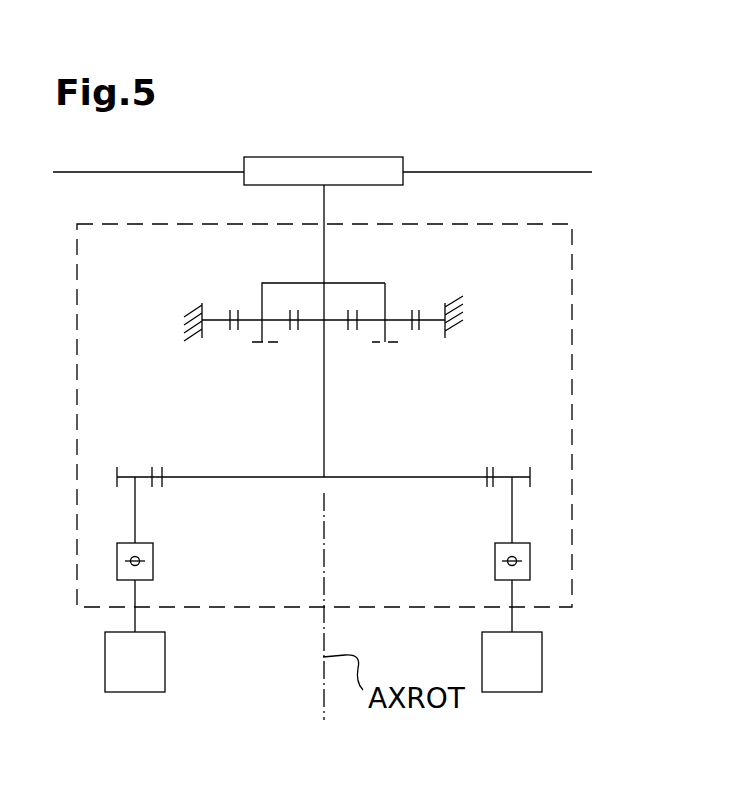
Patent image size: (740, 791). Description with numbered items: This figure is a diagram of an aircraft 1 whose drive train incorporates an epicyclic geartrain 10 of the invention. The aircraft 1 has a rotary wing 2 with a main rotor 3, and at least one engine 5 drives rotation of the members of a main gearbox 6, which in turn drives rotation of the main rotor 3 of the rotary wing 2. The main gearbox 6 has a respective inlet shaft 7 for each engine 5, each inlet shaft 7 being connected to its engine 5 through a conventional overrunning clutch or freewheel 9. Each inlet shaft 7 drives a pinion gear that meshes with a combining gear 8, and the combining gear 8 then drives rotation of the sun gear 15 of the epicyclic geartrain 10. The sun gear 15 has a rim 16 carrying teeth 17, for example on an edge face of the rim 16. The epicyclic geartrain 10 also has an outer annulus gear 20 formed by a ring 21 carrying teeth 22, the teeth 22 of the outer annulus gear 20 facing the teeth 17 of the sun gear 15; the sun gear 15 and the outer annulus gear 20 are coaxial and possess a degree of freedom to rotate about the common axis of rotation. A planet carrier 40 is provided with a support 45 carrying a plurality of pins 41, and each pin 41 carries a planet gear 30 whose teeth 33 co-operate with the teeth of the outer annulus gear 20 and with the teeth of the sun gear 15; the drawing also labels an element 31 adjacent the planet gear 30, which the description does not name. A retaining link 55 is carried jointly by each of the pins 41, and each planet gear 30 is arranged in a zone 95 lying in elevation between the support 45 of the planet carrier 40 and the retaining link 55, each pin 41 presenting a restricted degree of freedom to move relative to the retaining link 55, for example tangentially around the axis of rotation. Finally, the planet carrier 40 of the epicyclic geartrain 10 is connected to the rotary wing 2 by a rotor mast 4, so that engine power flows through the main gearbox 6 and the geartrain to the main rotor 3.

The aircraft 1 is at (590, 298).
The rotary wing 2 is at (403, 154).
The main rotor 3 is at (425, 158).
The rotor mast 4 is at (323, 205).
The engine 5 is at (144, 676).
The main gearbox 6 is at (75, 495).
The inlet shaft 7 is at (137, 508).
The combining gear 8 is at (433, 478).
The freewheel 9 is at (153, 550).
The epicyclic geartrain 10 is at (216, 284).
The sun gear 15 is at (340, 308).
The rim 16 is at (308, 325).
The teeth 17 is at (358, 318).
The outer annulus gear 20 is at (432, 330).
The ring 21 is at (218, 333).
The teeth 22 is at (228, 312).
The planet gear 30 is at (352, 342).
The gear 31 is at (368, 325).
The teeth 33 is at (408, 326).
The planet carrier 40 is at (387, 291).
The pin 41 is at (258, 297).
The support 45 is at (307, 282).
The retaining link 55 is at (253, 343).
The zone 95 is at (247, 333).